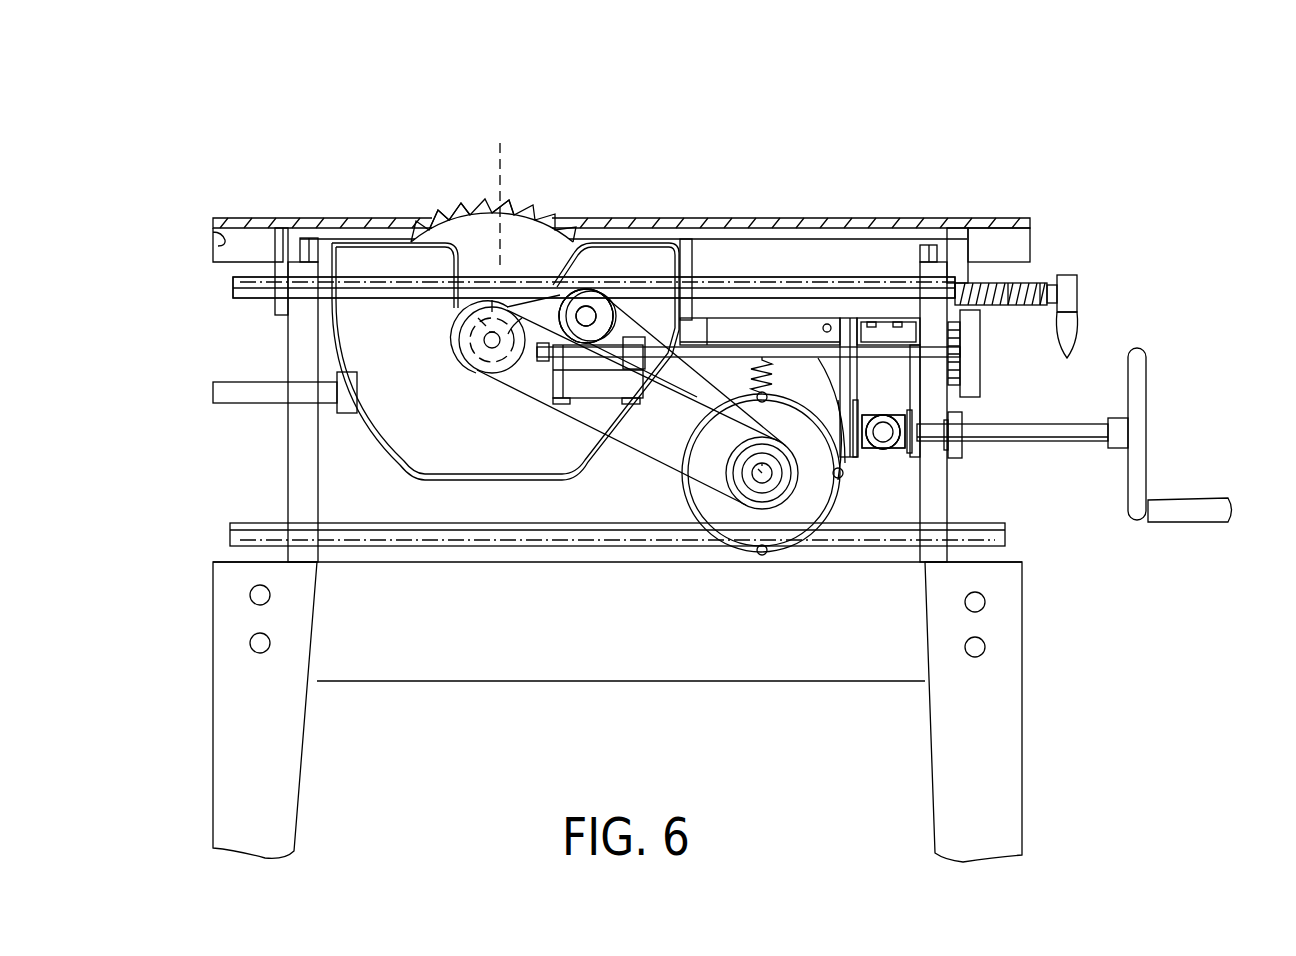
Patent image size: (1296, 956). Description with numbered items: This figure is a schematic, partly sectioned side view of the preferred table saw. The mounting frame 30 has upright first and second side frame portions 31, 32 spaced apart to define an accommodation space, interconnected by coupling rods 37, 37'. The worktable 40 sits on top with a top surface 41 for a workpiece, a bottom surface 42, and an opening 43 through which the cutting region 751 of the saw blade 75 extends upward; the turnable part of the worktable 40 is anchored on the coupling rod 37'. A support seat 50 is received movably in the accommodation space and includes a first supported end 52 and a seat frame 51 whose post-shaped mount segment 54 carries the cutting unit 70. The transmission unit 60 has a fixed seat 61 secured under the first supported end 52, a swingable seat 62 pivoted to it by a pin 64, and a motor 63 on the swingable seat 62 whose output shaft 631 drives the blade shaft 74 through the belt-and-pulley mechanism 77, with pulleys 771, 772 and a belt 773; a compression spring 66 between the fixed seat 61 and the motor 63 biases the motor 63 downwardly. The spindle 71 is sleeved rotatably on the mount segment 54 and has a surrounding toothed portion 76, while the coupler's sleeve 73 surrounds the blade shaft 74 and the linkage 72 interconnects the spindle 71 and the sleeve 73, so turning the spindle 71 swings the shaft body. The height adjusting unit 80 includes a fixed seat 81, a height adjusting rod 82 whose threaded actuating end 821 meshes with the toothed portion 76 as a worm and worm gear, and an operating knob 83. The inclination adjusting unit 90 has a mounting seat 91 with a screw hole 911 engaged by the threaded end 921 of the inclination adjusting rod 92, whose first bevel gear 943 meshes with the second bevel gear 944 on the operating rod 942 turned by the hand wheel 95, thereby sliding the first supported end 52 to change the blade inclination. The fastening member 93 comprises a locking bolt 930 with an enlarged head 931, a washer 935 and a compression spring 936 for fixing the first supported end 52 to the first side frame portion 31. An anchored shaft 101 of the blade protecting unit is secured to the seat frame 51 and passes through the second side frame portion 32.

The mounting frame 30 is at (288, 478).
The first side frame portion 31 is at (945, 268).
The second side frame portion 32 is at (300, 508).
The coupling rod 37 is at (667, 537).
The coupling rod 37' is at (539, 290).
The worktable 40 is at (242, 218).
The top surface 41 is at (280, 228).
The bottom surface 42 is at (215, 243).
The opening 43 is at (373, 218).
The support seat 50 is at (365, 433).
The seat frame 51 is at (330, 340).
The first supported end 52 is at (722, 290).
The mount segment 54 is at (582, 306).
The transmission unit 60 is at (685, 504).
The fixed seat 61 is at (758, 330).
The swingable seat 62 is at (858, 460).
The motor 63 is at (826, 512).
The pin 64 is at (826, 322).
The compression spring 66 is at (790, 358).
The cutting unit 70 is at (426, 224).
The spindle 71 is at (612, 300).
The linkage 72 is at (522, 318).
The sleeve 73 is at (504, 187).
The blade shaft 74 is at (482, 330).
The saw blade 75 is at (441, 228).
The cutting region 751 is at (515, 213).
The surrounding toothed portion 76 is at (600, 310).
The actuating end 821 is at (601, 308).
The belt-and-pulley mechanism 77 is at (658, 460).
The pulley 771 is at (748, 496).
The pulley 772 is at (475, 372).
The belt 773 is at (632, 452).
The height adjusting unit 80 is at (1078, 337).
The fixed seat 81 is at (635, 337).
The height adjusting rod 82 is at (695, 347).
The operating knob 83 is at (972, 370).
The inclination adjusting unit 90 is at (1147, 389).
The mounting seat 91 is at (885, 318).
The inclination adjusting rod 92 is at (888, 443).
The fastening member 93 is at (1013, 283).
The hand wheel 95 is at (1147, 356).
The anchored shaft 101 is at (230, 391).
The screw hole 911 is at (880, 442).
The threaded end 921 is at (884, 459).
The locking bolt 930 is at (1080, 278).
The enlarged head 931 is at (1078, 293).
The washer 935 is at (958, 276).
The compression spring 936 is at (1045, 281).
The operating rod 942 is at (1087, 441).
The first bevel gear 943 is at (890, 420).
The second bevel gear 944 is at (873, 414).
The output shaft 631 is at (768, 480).